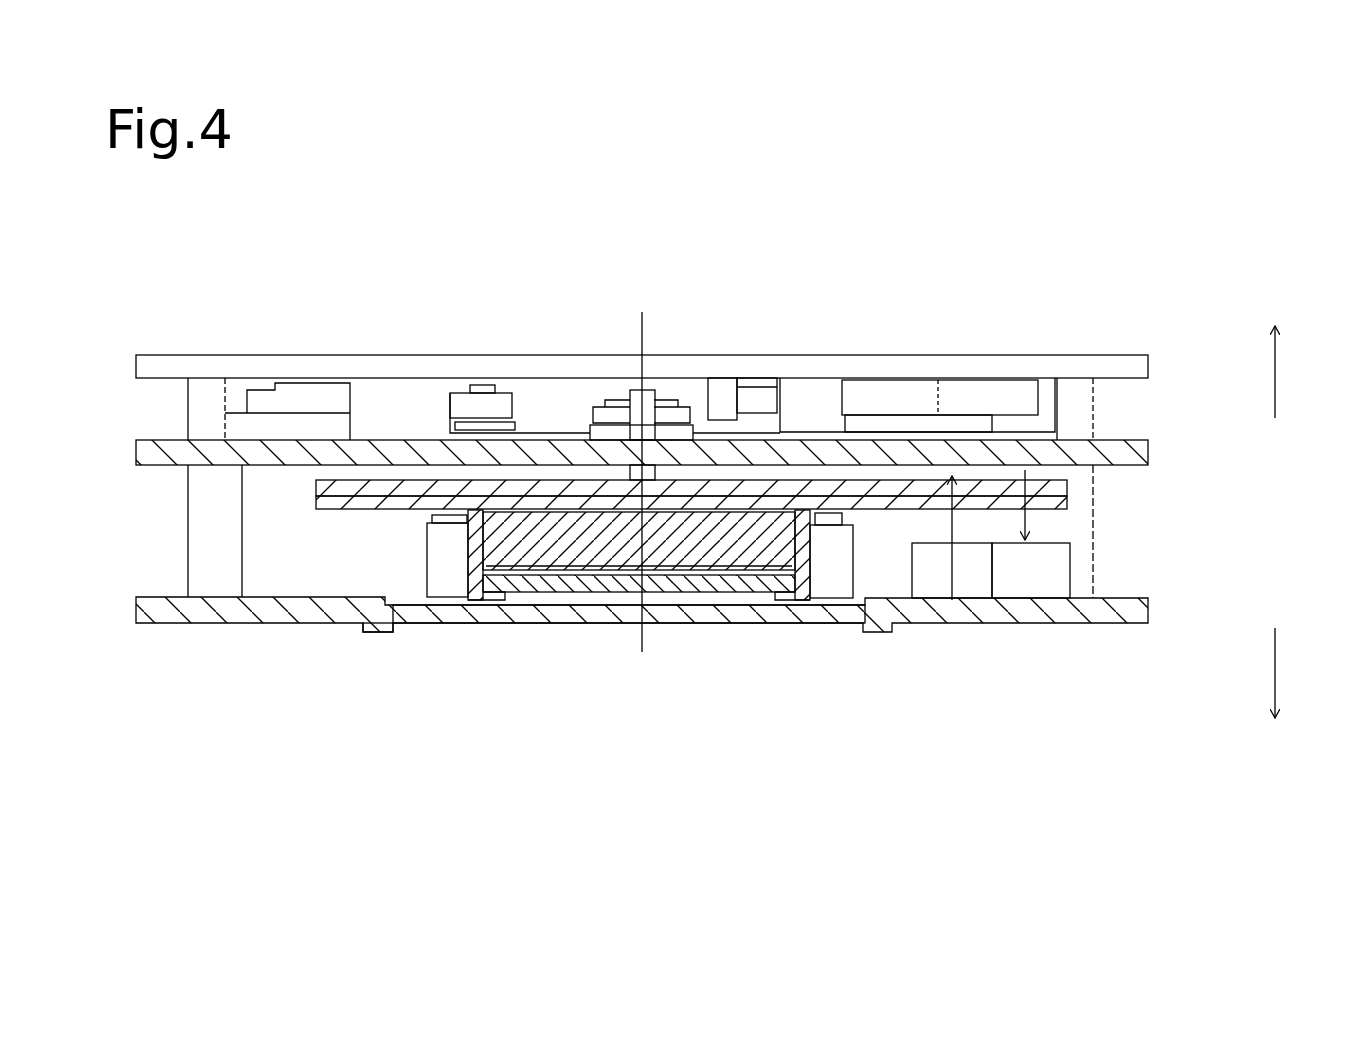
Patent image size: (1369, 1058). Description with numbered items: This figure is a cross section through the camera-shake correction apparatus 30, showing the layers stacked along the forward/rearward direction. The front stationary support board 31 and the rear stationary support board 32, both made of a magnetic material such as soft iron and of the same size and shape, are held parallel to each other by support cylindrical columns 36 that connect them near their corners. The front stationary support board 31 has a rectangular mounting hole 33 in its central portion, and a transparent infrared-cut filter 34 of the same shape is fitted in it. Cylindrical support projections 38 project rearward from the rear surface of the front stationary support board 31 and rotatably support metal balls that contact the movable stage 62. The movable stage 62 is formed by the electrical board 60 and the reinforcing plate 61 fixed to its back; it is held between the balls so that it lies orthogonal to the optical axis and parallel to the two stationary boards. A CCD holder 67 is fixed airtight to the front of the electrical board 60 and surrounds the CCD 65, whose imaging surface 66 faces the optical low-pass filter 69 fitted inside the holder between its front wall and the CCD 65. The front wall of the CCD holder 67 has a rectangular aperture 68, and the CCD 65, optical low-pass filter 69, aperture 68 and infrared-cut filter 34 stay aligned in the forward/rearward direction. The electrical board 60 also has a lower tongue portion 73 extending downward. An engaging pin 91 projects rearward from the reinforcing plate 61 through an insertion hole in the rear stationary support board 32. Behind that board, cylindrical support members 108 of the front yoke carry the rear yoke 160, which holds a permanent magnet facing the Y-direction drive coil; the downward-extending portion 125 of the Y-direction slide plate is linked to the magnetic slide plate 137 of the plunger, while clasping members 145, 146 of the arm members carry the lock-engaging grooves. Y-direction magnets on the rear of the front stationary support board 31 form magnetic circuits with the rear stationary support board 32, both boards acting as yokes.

The camera-shake correction apparatus 30 is at (93, 366).
The front stationary support board 31 is at (283, 620).
The rear stationary support board 32 is at (1130, 453).
The rectangular mounting hole 33 is at (402, 632).
The infrared-cut filter 34 is at (447, 625).
The support cylindrical column 36 is at (197, 533).
The cylindrical support projection 38 is at (438, 560).
The electrical board 60 is at (312, 508).
The reinforcing plate 61 is at (318, 492).
The movable stage 62 is at (242, 672).
The CCD 65 is at (710, 590).
The imaging surface 66 is at (577, 572).
The CCD holder 67 is at (500, 600).
The aperture 68 is at (755, 603).
The optical low-pass filter 69 is at (625, 592).
The lower tongue portion 73 is at (1070, 500).
The engaging pin 91 is at (648, 390).
The cylindrical support member 108 is at (197, 394).
The downward-extending portion 125 is at (755, 437).
The magnetic slide plate 137 is at (468, 405).
The clasping member 145 is at (593, 407).
The clasping member 146 is at (593, 421).
The rear yoke 160 is at (1095, 378).